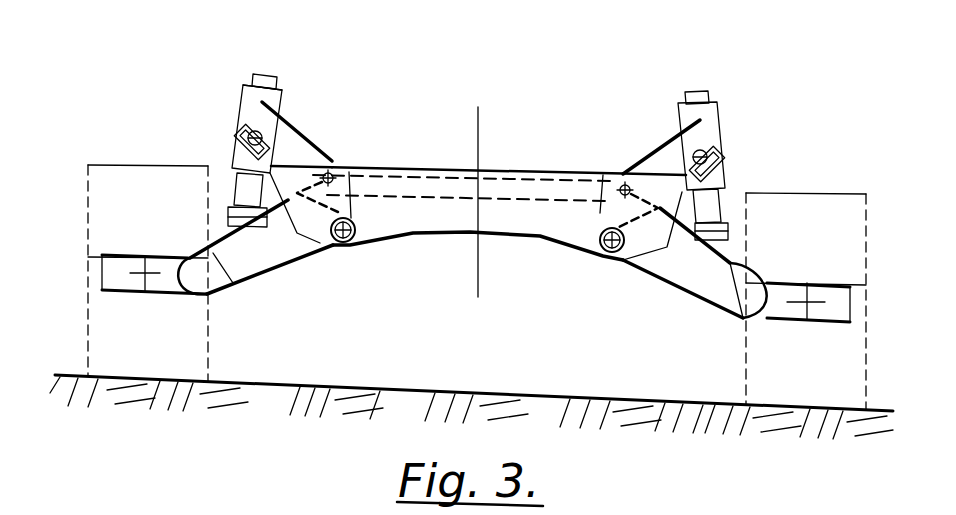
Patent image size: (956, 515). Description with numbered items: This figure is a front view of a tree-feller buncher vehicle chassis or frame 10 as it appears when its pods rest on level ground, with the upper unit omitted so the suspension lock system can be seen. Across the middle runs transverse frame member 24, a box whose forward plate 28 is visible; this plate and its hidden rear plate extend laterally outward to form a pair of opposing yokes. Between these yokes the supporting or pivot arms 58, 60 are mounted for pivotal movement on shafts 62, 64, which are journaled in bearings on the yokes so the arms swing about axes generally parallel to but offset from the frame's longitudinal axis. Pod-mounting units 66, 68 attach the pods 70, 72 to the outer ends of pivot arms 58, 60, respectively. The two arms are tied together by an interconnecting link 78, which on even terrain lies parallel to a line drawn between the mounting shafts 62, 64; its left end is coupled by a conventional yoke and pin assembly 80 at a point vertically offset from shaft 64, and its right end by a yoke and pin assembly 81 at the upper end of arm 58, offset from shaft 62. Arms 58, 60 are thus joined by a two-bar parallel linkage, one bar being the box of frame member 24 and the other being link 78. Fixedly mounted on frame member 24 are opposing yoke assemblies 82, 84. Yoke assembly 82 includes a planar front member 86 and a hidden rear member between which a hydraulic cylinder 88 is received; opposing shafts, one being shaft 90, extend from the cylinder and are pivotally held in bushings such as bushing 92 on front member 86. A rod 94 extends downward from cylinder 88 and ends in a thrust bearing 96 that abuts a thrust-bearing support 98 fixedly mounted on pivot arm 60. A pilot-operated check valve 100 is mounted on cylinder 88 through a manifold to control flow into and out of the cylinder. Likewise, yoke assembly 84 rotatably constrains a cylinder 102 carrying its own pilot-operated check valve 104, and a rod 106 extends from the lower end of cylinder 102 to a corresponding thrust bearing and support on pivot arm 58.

The vehicle chassis or frame 10 is at (780, 130).
The transverse frame member 24 is at (502, 163).
The forward plate 28 is at (382, 212).
The pivot arm 58 is at (685, 290).
The pivot arm 60 is at (268, 273).
The shaft 62 is at (600, 257).
The shaft 64 is at (355, 243).
The pod-mounting unit 66 is at (855, 283).
The pod-mounting unit 68 is at (103, 255).
The pod 70 is at (808, 193).
The pod 72 is at (107, 165).
The interconnecting link 78 is at (395, 166).
The yoke and pin assembly 80 is at (350, 160).
The yoke and pin assembly 81 is at (613, 175).
The yoke assembly 82 is at (297, 113).
The yoke assembly 84 is at (670, 140).
The front member 86 is at (312, 135).
The hydraulic cylinder 88 is at (240, 96).
The shaft 90 is at (245, 126).
The bushing 92 is at (279, 92).
The rod 94 is at (246, 156).
The thrust bearing 96 is at (233, 200).
The thrust-bearing support 98 is at (227, 209).
The pilot-operated check valve 100 is at (263, 73).
The cylinder 102 is at (723, 110).
The pilot-operated check valve 104 is at (700, 91).
The rod 106 is at (707, 210).